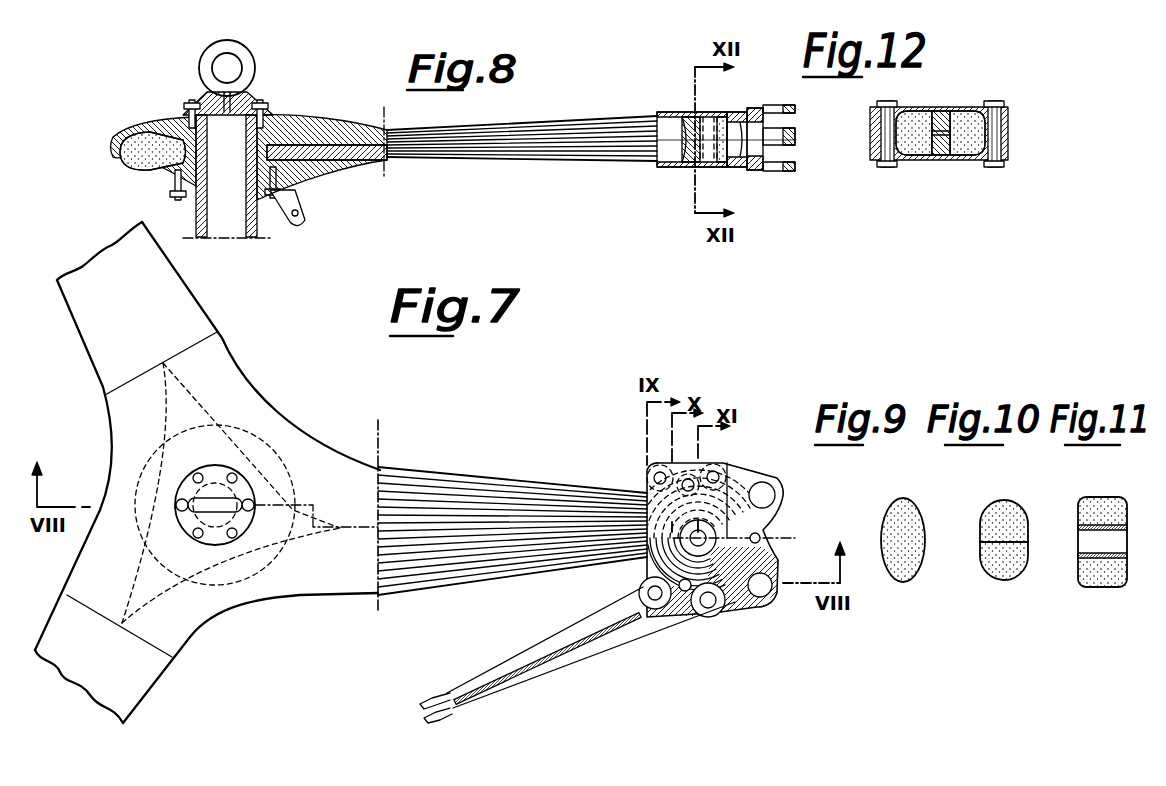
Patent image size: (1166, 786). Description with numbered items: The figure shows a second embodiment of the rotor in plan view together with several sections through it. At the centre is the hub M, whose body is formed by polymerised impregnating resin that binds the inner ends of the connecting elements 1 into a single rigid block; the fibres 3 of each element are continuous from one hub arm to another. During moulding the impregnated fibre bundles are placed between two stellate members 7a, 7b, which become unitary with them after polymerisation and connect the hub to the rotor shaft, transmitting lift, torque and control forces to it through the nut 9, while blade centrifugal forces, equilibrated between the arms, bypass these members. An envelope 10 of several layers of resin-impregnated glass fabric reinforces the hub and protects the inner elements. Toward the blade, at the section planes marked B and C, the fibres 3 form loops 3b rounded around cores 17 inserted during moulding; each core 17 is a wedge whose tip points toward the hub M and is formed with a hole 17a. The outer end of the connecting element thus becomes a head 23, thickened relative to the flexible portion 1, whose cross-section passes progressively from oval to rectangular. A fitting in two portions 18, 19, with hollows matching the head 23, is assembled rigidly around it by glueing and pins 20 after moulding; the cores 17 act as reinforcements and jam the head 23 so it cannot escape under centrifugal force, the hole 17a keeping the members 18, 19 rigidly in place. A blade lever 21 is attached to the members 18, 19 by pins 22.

In FIG. 7, the connecting element 1 is at (445, 470).
In FIG. 9, the connecting element 1 is at (892, 507).
In FIG. 7, the fibres 3 is at (495, 498).
In FIG. 7, the loops 3b is at (720, 503).
In FIG. 8, the stellate member 7a is at (278, 120).
In FIG. 8, the stellate member 7b is at (297, 167).
In FIG. 8, the nut 9 is at (207, 98).
In FIG. 8, the envelope 10 is at (307, 130).
In FIG. 8, the core 17 is at (688, 117).
In FIG. 12, the core 17 is at (938, 107).
In FIG. 7, the core 17 is at (683, 545).
In FIG. 10, the core 17 is at (1000, 545).
In FIG. 11, the core 17 is at (1110, 523).
In FIG. 8, the hole 17a is at (710, 125).
In FIG. 8, the fitting portion 18 is at (740, 167).
In FIG. 12, the fitting portion 18 is at (903, 160).
In FIG. 8, the fitting portion 19 is at (752, 115).
In FIG. 12, the fitting portion 19 is at (958, 108).
In FIG. 12, the pins 20 is at (1000, 101).
In FIG. 7, the pins 20 is at (688, 479).
In FIG. 7, the blade lever 21 is at (577, 653).
In FIG. 7, the pins 22 is at (710, 602).
In FIG. 7, the head 23 is at (705, 503).
In FIG. 10, the head 23 is at (998, 513).
In FIG. 11, the head 23 is at (1090, 503).
In FIG. 7, the hub M is at (284, 405).
In FIG. 7, the section plane B is at (382, 438).
In FIG. 8, the blade tip fitting C is at (657, 123).
In FIG. 7, the blade tip fitting C is at (707, 550).